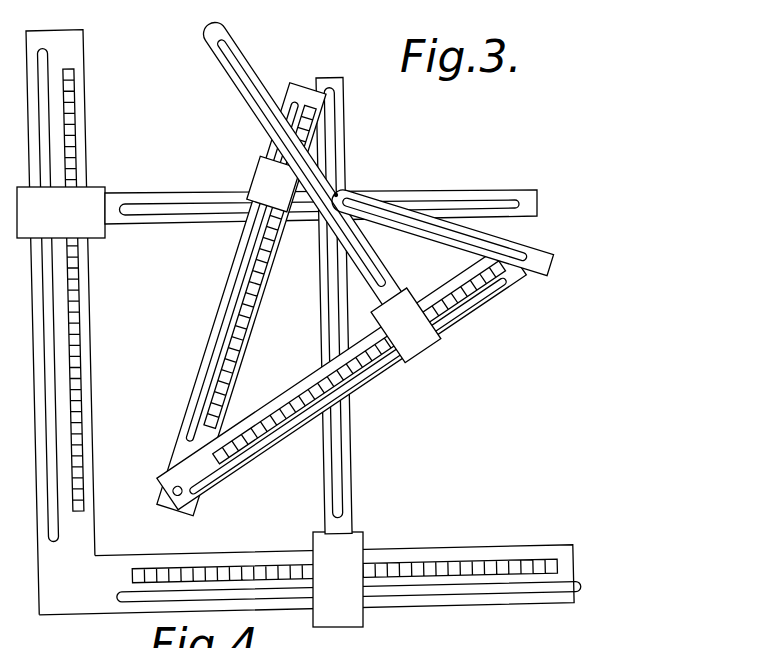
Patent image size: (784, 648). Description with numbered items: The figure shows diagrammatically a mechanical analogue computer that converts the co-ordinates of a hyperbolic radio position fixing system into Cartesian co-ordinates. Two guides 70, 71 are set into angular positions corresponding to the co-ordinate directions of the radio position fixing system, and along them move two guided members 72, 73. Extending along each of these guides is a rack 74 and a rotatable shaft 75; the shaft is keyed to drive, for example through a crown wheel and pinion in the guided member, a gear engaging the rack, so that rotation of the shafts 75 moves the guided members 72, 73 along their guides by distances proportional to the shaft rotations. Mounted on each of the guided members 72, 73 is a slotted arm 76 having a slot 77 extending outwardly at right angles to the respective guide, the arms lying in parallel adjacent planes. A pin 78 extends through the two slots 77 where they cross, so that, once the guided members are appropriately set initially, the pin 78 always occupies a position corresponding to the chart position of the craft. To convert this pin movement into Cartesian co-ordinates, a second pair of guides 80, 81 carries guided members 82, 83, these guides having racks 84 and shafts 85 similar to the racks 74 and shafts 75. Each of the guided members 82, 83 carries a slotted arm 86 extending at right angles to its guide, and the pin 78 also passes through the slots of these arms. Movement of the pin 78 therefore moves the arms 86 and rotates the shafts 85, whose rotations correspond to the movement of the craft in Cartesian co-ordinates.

The guide 70 is at (447, 322).
The guide 71 is at (300, 88).
The guided member 72 is at (413, 348).
The guided member 73 is at (262, 173).
The rack 74 is at (247, 323).
The rotatable shaft 75 is at (230, 323).
The slotted arm 76 is at (222, 32).
The slot 77 is at (247, 84).
The pin 78 is at (338, 194).
The guide 80 is at (502, 557).
The guide 81 is at (70, 59).
The guided member 82 is at (348, 548).
The guided member 83 is at (92, 230).
The rack 84 is at (73, 288).
The shaft 85 is at (48, 343).
The slotted arm 86 is at (333, 88).